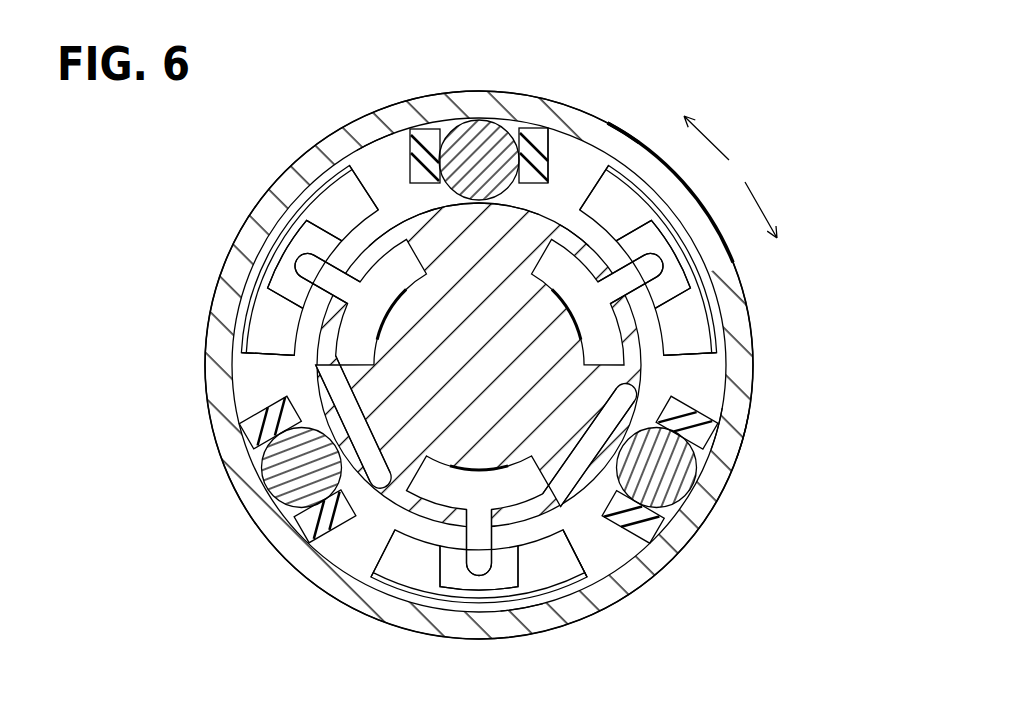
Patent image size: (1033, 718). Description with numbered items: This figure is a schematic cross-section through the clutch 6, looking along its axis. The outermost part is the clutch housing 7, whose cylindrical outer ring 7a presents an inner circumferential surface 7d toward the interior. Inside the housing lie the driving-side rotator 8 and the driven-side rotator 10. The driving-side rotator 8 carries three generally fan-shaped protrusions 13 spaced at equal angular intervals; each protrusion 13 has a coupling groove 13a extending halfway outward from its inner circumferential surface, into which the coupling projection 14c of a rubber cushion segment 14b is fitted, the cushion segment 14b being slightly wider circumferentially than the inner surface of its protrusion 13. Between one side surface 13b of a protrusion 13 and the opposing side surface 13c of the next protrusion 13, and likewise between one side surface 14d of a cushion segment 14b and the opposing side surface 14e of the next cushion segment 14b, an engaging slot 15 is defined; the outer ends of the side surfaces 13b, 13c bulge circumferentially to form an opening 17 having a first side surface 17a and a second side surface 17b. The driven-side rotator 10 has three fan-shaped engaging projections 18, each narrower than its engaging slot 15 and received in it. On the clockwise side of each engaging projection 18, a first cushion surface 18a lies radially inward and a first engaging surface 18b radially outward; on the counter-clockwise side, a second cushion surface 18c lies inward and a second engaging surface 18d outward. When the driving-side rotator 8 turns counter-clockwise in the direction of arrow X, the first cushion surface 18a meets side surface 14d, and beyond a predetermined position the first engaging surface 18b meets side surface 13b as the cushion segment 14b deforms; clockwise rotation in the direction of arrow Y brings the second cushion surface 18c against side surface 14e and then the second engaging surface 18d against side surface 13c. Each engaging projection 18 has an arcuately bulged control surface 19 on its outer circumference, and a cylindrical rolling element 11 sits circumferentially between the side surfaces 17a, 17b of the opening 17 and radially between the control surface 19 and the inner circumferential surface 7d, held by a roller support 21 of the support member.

The clutch 6 is at (834, 303).
The clutch housing 7 is at (755, 357).
The outer ring 7a is at (748, 400).
The inner circumferential surface 7d is at (748, 430).
The driving-side rotator 8 is at (545, 618).
The driven-side rotator 10 is at (491, 405).
The rolling element 11 is at (490, 124).
The protrusion 13 is at (245, 290).
The coupling groove 13a is at (284, 262).
The side surface 13b is at (612, 215).
The side surface 13c is at (425, 207).
The cushion segment 14b is at (402, 310).
The coupling projection 14c is at (292, 300).
The side surface 14d is at (626, 262).
The side surface 14e is at (346, 265).
The engaging slot 15 is at (583, 199).
The opening 17 is at (352, 150).
The first side surface 17a is at (612, 148).
The second side surface 17b is at (376, 140).
The engaging projection 18 is at (568, 168).
The first cushion surface 18a is at (535, 268).
The first engaging surface 18b is at (535, 218).
The second cushion surface 18c is at (465, 280).
The second engaging surface 18d is at (482, 238).
The control surface 19 is at (415, 190).
The roller support 21 is at (537, 138).
The arrow X is at (716, 137).
The arrow Y is at (757, 196).